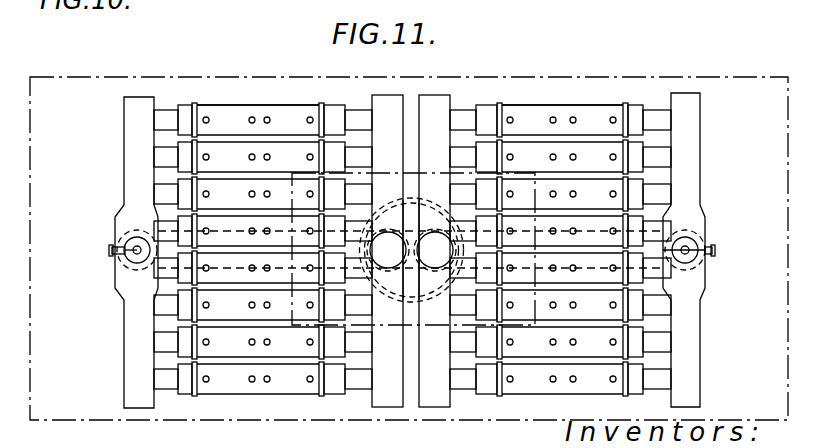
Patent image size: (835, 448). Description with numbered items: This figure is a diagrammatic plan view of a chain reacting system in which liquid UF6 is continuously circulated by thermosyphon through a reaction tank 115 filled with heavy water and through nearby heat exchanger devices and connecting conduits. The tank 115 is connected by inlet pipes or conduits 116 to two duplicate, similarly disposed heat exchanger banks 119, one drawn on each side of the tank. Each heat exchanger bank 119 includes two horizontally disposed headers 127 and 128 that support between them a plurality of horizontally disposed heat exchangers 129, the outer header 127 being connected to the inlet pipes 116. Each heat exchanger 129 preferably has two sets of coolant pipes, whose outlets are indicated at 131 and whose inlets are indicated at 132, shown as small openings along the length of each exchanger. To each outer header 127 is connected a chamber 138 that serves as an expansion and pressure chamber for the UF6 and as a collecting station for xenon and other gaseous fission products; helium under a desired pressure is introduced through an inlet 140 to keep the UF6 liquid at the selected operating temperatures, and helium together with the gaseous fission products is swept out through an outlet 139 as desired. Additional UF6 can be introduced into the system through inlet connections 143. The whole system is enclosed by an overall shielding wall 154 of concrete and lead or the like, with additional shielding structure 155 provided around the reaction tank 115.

The overall wall 154 is at (122, 64).
The additional shielding structure 155 is at (409, 110).
The coolant pipe inlets 132 is at (207, 117).
The heat exchangers 129 is at (228, 153).
The heat exchanger bank 119 is at (309, 100).
The coolant pipe outlets 131 is at (306, 122).
The chamber 138 is at (126, 246).
The inlet 140 is at (111, 254).
The inlet pipes or conduits 116 is at (237, 277).
The header 127 is at (137, 346).
The reaction tank 115 is at (432, 307).
The header 128 is at (437, 402).
The outlet 139 is at (698, 243).
The inlet connections 143 is at (712, 254).